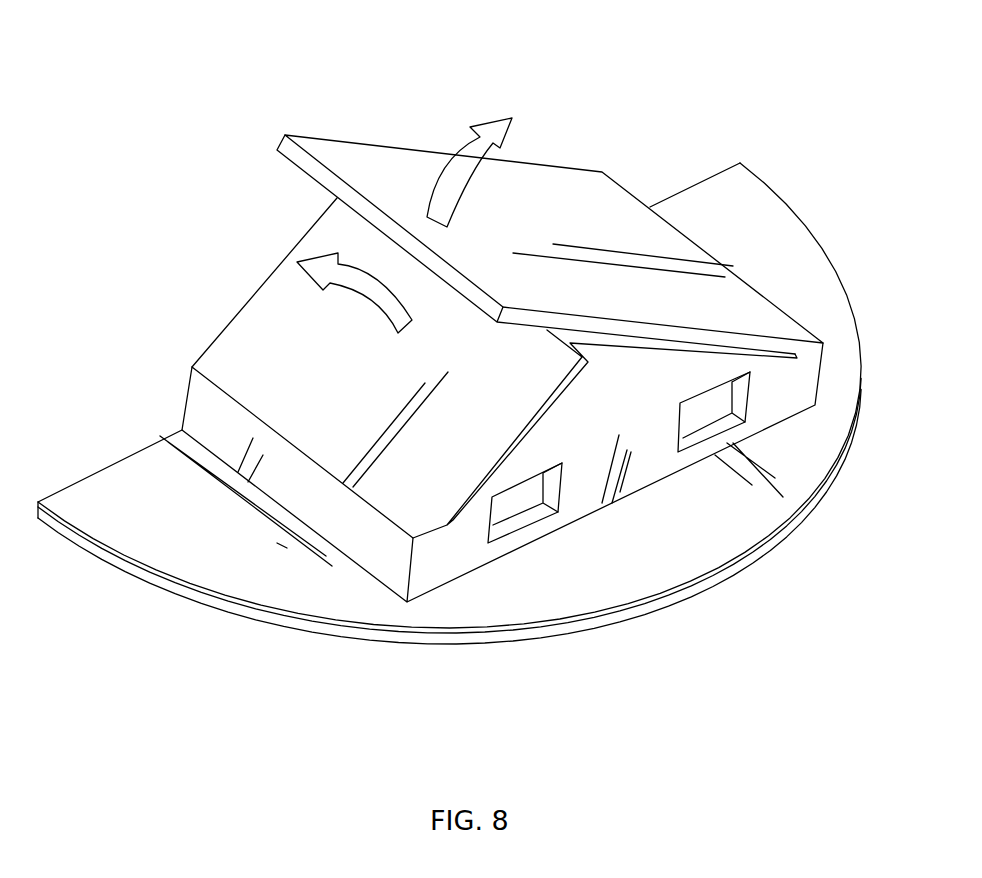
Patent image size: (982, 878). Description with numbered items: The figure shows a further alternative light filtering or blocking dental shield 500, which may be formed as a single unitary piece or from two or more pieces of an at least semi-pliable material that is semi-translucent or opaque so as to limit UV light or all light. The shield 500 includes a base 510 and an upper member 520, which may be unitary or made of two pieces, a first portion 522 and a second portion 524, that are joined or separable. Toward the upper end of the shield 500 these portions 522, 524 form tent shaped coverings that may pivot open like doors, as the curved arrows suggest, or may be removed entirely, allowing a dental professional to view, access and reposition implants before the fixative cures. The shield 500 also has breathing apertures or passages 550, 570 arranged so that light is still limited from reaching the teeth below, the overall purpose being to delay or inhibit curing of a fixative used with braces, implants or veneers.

The dental shield 500 is at (664, 108).
The base 510 is at (779, 237).
The upper member 520 is at (208, 295).
The first portion 522 is at (538, 182).
The second portion 524 is at (325, 237).
The breathing aperture 550 is at (528, 512).
The breathing aperture 570 is at (740, 402).